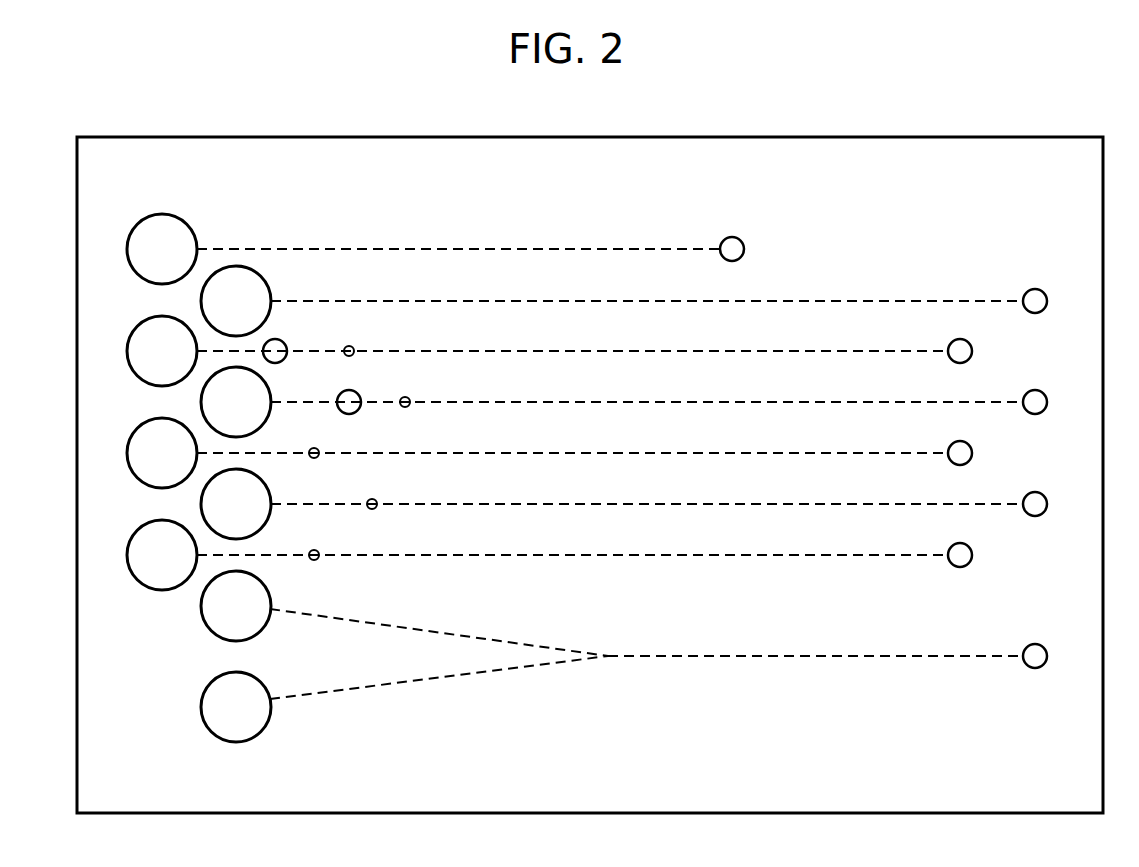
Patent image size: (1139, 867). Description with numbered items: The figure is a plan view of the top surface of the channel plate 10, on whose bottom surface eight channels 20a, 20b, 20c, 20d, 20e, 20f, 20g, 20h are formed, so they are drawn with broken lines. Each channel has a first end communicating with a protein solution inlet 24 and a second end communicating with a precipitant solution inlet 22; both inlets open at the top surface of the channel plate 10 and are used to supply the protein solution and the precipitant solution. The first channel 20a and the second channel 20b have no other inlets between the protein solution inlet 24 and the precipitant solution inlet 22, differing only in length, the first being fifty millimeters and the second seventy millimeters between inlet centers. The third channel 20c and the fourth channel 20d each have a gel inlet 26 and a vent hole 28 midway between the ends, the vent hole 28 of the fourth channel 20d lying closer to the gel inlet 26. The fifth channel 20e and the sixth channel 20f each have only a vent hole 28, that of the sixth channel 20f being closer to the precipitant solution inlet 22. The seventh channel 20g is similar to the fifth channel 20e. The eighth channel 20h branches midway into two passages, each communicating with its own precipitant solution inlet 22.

The channel plate 10 is at (905, 137).
The first channel 20a is at (585, 249).
The second channel 20b is at (585, 301).
The third channel 20c is at (585, 351).
The fourth channel 20d is at (585, 402).
The fifth channel 20e is at (585, 453).
The sixth channel 20f is at (585, 504).
The seventh channel 20g is at (585, 555).
The eighth channel 20h is at (680, 656).
The precipitant solution inlet 22 is at (157, 215).
The protein solution inlet 24 is at (741, 240).
The gel inlet 26 is at (283, 342).
The vent hole 28 is at (353, 346).